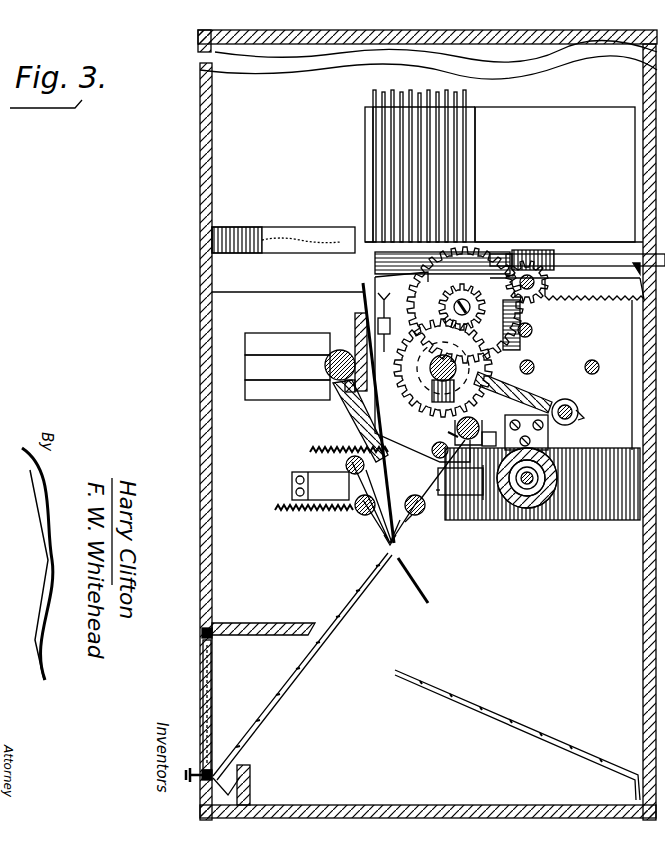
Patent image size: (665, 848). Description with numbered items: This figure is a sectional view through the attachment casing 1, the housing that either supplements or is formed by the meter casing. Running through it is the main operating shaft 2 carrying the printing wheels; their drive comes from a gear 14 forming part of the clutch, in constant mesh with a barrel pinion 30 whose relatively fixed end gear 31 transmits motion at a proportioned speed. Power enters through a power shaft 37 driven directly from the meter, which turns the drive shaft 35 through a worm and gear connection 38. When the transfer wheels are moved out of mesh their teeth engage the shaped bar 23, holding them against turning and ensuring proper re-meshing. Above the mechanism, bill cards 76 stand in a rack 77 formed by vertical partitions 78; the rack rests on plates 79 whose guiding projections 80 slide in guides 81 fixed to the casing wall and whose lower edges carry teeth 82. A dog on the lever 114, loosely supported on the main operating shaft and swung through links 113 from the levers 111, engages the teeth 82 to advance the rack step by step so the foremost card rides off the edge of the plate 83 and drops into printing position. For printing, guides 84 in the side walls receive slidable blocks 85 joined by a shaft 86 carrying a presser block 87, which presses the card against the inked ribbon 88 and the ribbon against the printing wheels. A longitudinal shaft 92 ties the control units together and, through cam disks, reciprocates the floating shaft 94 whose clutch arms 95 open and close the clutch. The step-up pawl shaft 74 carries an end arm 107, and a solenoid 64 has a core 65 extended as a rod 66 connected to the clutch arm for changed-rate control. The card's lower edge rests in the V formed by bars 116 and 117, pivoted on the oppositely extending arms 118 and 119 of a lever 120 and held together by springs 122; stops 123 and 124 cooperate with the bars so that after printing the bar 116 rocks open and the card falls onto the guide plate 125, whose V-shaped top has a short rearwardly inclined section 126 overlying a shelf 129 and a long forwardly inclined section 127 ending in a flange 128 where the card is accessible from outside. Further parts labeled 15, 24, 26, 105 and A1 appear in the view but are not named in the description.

The casing 1 is at (200, 192).
The main operating shaft 2 is at (428, 352).
The gear 14 is at (410, 304).
The hub 15 is at (443, 355).
The bar 23 is at (493, 439).
The pivot hub 24 is at (480, 427).
The pin 26 is at (534, 365).
The barrel pinion 30 is at (462, 297).
The end gear 31 is at (428, 268).
The drive shaft 35 is at (594, 289).
The power shaft 37 is at (605, 262).
The worm and gear connection 38 is at (535, 255).
The solenoid 64 is at (548, 501).
The core 65 is at (556, 449).
The rod 66 is at (531, 510).
The shaft 74 is at (433, 449).
The card 76 is at (420, 101).
The rack 77 is at (508, 120).
The vertical partitions 78 is at (372, 127).
The plate 79 is at (372, 300).
The guiding projection 80 is at (358, 241).
The guide 81 is at (243, 286).
The teeth 82 is at (632, 280).
The plate 83 is at (378, 266).
The guide 84 is at (287, 344).
The slidable block 85 is at (287, 367).
The shaft 86 is at (335, 380).
The presser block 87 is at (355, 336).
The inked ribbon 88 is at (348, 380).
The shaft 92 is at (596, 362).
The floating shaft 94 is at (664, 405).
The clutch arm 95 is at (528, 395).
The link 105 is at (487, 482).
The arm 107 is at (460, 481).
The lever 111 is at (378, 495).
The link 113 is at (451, 491).
The lever 114 is at (450, 434).
The bar 116 is at (383, 530).
The bar 117 is at (405, 527).
The arm 118 is at (368, 518).
The arm 119 is at (410, 522).
The lever 120 is at (380, 432).
The spring 122 is at (353, 512).
The stop 123 is at (340, 473).
The stop 124 is at (500, 500).
The guide plate 125 is at (385, 559).
The rearwardly inclined section 126 is at (410, 588).
The forwardly inclined section 127 is at (358, 603).
The flange 128 is at (222, 777).
The shelf 129 is at (530, 725).
The pin A1 is at (533, 331).